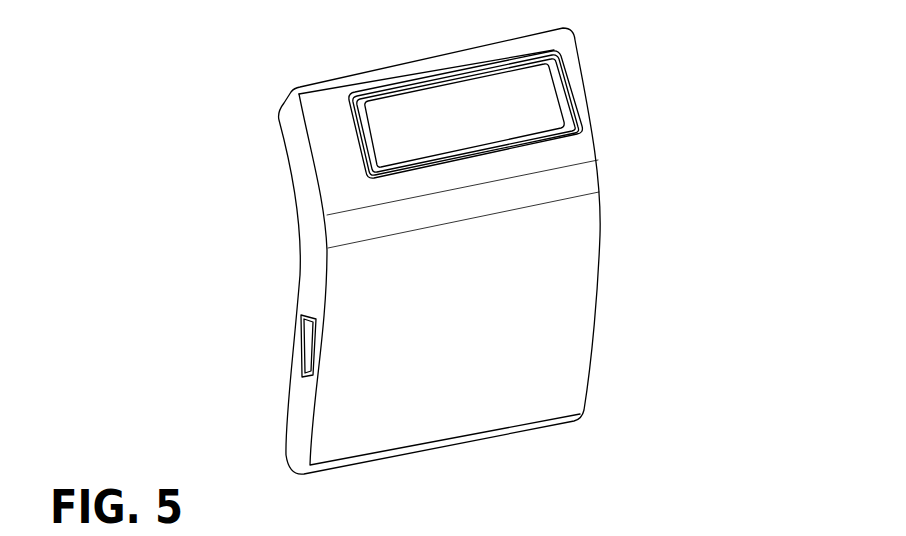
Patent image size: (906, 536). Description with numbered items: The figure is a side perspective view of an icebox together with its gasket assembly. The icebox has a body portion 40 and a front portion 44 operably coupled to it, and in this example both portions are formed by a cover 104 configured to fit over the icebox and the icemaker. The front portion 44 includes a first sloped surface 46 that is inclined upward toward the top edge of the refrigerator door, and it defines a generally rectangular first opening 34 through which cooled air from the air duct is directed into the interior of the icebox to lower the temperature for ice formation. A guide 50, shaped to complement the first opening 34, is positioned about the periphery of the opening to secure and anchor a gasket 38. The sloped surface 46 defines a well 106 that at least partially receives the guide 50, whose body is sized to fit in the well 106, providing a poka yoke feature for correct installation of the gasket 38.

The first opening 34 is at (507, 98).
The gasket 38 is at (367, 148).
The body portion 40 is at (528, 310).
The front portion 44 is at (567, 157).
The first sloped surface 46 is at (336, 146).
The guide 50 is at (353, 107).
The cover 104 is at (288, 309).
The well 106 is at (568, 105).